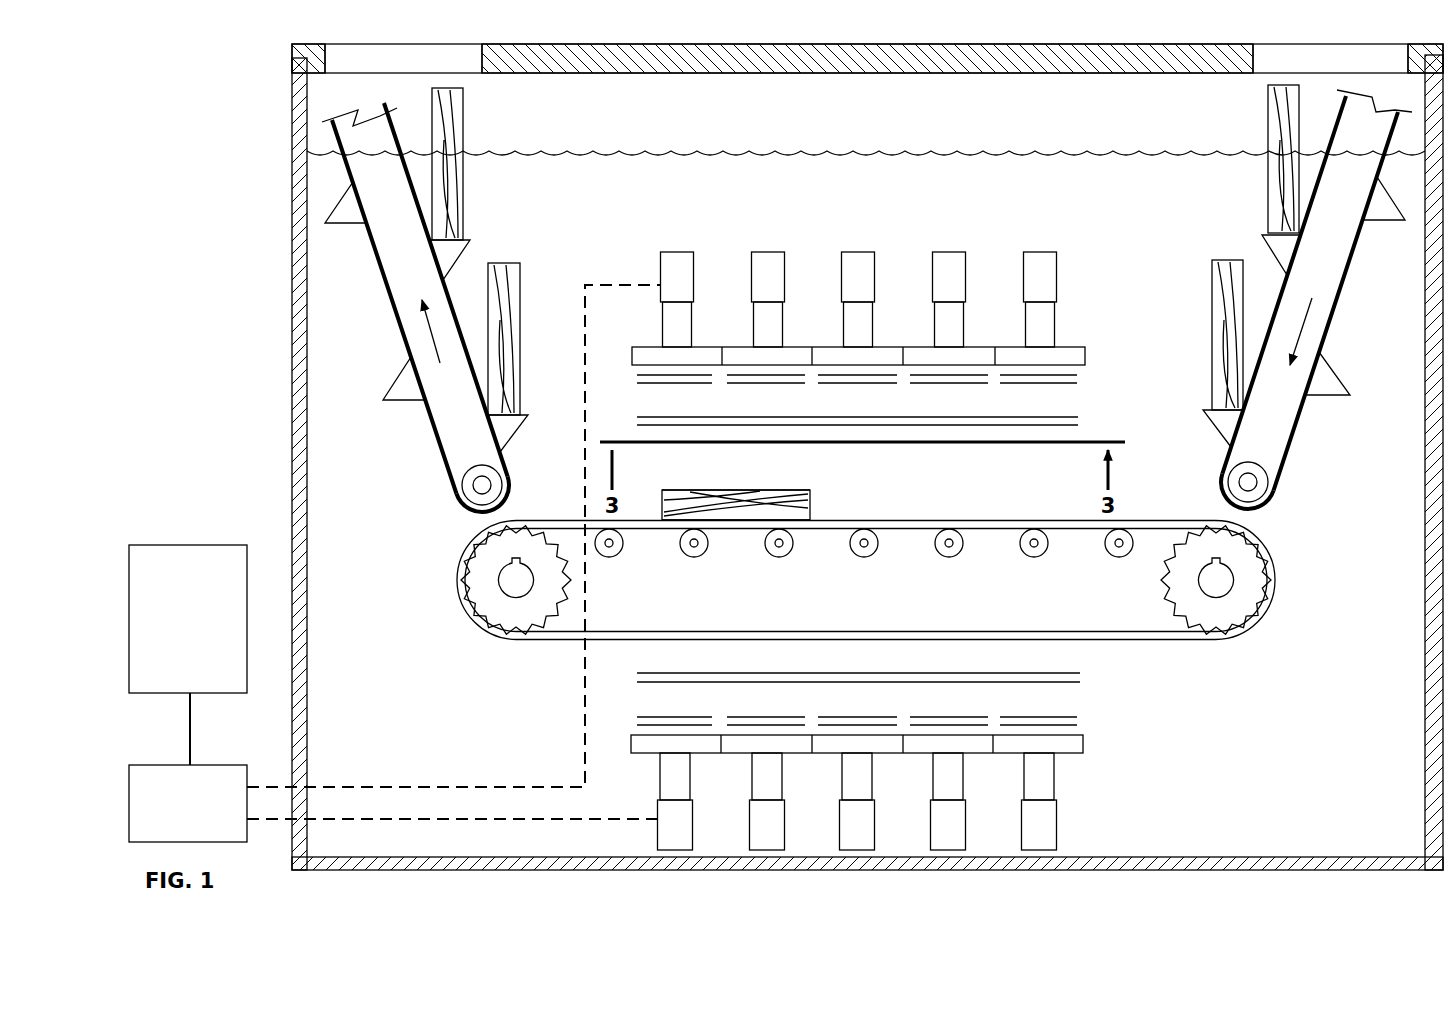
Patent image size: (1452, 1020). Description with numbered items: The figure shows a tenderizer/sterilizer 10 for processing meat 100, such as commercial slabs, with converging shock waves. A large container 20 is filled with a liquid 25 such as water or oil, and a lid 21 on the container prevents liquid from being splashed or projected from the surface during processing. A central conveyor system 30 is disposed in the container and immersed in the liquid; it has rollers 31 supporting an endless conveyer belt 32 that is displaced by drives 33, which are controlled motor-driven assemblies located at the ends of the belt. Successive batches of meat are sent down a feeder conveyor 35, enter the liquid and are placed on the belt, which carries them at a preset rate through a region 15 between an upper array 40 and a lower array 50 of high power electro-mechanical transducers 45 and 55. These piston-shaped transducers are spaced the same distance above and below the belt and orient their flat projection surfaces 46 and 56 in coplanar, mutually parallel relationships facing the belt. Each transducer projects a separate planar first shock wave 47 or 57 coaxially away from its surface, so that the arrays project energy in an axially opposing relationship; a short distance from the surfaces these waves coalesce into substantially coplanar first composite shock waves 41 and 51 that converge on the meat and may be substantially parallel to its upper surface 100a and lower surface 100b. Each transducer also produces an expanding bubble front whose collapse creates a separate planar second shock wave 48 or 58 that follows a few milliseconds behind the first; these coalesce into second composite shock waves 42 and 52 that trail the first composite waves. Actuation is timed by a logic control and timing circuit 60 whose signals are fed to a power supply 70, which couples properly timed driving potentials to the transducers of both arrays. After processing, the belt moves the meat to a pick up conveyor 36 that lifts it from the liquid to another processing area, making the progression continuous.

The tenderizer/sterilizer 10 is at (225, 82).
The region 15 is at (826, 457).
The container 20 is at (292, 187).
The lid 21 is at (544, 74).
The liquid 25 is at (1073, 150).
The conveyor system 30 is at (925, 553).
The rollers 31 is at (944, 556).
The conveyer belt 32 is at (975, 520).
The drives 33 is at (557, 603).
The feeder conveyor 35 is at (1309, 440).
The pick up conveyor 36 is at (416, 444).
The upper array 40 is at (850, 301).
The first composite shock wave 41 is at (1002, 425).
The second composite shock wave 42 is at (1062, 418).
The high power electro-mechanical transducers 45 is at (740, 347).
The projection surfaces 46 is at (1052, 367).
The first shock waves 47 is at (738, 384).
The second shock waves 48 is at (835, 376).
The lower array 50 is at (886, 747).
The first composite shock wave 51 is at (945, 672).
The second composite shock wave 52 is at (820, 683).
The high power electro-mechanical transducers 55 is at (640, 753).
The projection surfaces 56 is at (1050, 735).
The first shock waves 57 is at (955, 717).
The second shock waves 58 is at (665, 725).
The logic control and timing circuit 60 is at (227, 543).
The power supply 70 is at (150, 765).
The meat 100 is at (512, 265).
The upper surface 100a is at (790, 490).
The lower surface 100b is at (733, 523).